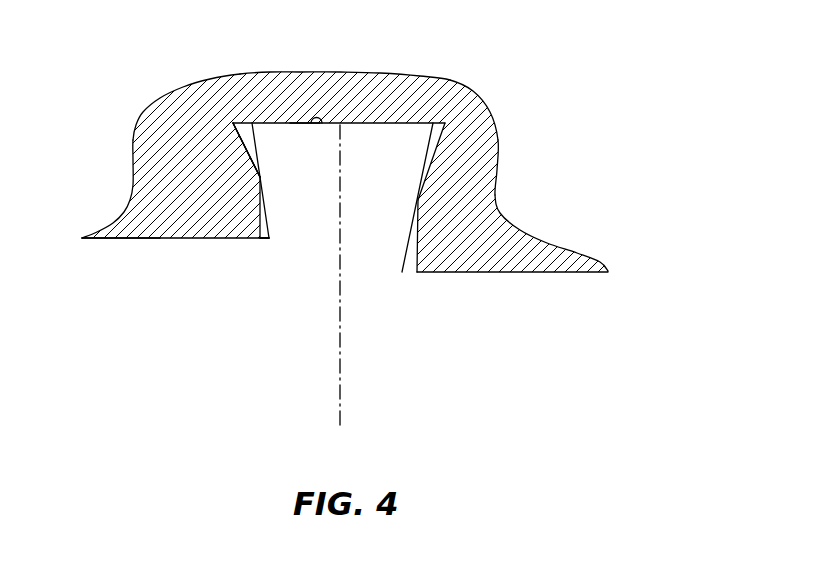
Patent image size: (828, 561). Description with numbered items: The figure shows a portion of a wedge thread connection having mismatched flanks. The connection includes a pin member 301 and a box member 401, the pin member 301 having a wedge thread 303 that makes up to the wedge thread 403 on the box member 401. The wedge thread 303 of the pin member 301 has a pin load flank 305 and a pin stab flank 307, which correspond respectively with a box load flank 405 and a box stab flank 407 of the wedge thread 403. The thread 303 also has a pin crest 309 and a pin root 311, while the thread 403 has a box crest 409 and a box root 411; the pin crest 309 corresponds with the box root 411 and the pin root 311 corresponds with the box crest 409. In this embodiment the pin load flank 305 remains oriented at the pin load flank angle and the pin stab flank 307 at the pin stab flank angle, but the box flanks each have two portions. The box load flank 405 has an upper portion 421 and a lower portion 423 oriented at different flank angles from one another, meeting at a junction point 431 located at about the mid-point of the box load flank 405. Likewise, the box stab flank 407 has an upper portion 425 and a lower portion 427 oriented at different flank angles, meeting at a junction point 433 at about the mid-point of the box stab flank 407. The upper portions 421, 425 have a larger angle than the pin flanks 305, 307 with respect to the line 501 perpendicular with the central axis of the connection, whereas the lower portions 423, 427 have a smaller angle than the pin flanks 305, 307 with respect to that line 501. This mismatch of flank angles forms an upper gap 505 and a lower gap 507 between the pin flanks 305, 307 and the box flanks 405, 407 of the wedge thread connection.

The pin member 301 is at (106, 341).
The wedge thread 303 is at (400, 194).
The pin load flank 305 is at (270, 221).
The pin stab flank 307 is at (403, 247).
The pin crest 309 is at (320, 122).
The pin root 311 is at (153, 241).
The box member 401 is at (686, 236).
The wedge thread 403 is at (113, 164).
The box load flank 405 is at (256, 188).
The box stab flank 407 is at (422, 198).
The box crest 409 is at (136, 238).
The box root 411 is at (305, 122).
The upper portion 421 is at (258, 175).
The lower portion 423 is at (256, 229).
The upper portion 425 is at (449, 128).
The lower portion 427 is at (420, 250).
The junction point 431 is at (257, 180).
The junction point 433 is at (423, 193).
The line perpendicular with a central axis 501 is at (342, 390).
The upper gap 505 is at (240, 122).
The lower gap 507 is at (272, 236).